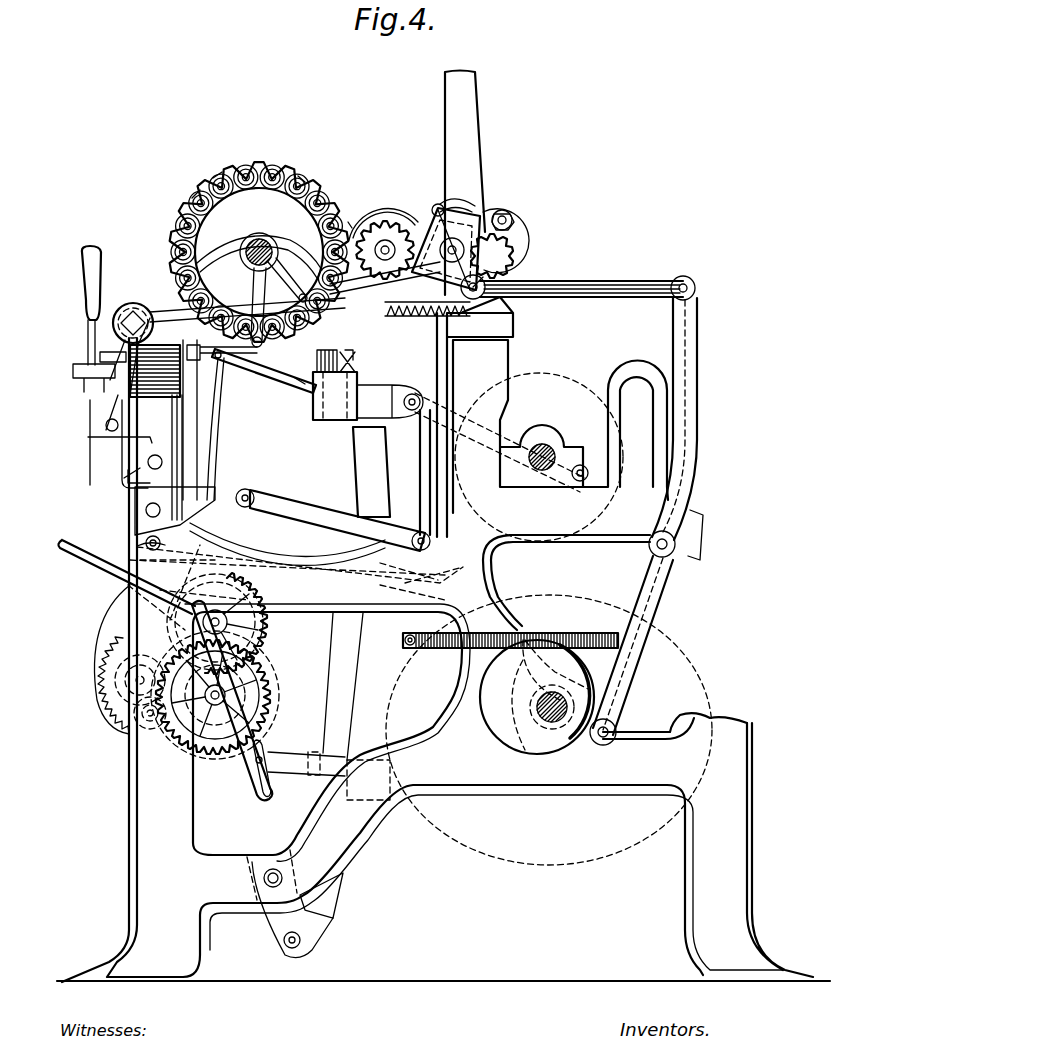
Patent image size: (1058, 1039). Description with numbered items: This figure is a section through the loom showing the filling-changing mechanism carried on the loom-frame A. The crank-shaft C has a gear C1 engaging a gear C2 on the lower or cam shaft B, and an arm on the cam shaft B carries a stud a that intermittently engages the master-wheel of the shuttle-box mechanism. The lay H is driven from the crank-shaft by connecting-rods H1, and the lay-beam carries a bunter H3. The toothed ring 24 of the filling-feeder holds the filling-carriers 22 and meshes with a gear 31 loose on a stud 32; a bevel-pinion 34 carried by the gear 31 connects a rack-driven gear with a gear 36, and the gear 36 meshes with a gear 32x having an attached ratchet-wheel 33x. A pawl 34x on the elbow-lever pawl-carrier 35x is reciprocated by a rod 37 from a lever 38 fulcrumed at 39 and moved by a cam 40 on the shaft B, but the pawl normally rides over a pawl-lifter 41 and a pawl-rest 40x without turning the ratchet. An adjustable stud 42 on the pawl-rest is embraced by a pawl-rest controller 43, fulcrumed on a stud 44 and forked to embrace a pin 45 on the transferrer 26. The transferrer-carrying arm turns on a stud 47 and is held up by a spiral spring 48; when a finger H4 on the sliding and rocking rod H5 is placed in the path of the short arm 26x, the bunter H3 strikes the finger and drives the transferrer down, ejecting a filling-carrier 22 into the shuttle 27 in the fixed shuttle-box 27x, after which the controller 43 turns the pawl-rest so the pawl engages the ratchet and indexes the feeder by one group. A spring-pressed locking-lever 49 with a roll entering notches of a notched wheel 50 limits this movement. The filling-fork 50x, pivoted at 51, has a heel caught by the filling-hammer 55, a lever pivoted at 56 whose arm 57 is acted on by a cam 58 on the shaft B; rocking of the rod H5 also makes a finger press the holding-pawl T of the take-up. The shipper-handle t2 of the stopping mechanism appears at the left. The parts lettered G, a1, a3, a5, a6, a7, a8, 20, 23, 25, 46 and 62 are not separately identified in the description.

The loom-frame A is at (128, 797).
The lower or cam shaft B is at (555, 712).
The crank-shaft C is at (130, 478).
The gear C1 is at (574, 395).
The gear C2 is at (590, 862).
The holding-pawl T is at (110, 608).
The gear train G is at (197, 686).
The lay H is at (324, 418).
The connecting-rods H1 is at (520, 435).
The bunter H3 is at (313, 392).
The finger H4 is at (104, 418).
The sliding and rocking rod H5 is at (112, 440).
The stud a is at (140, 520).
The arm a1 is at (247, 490).
The slide bar a3 is at (347, 472).
The slide a5 is at (418, 476).
The sprocket wheel a6 is at (300, 185).
The hub a7 is at (260, 236).
The curved slot a8 is at (213, 240).
The shipper-handle t2 is at (78, 278).
The plate 20 is at (124, 478).
The filling-carrier 22 is at (216, 188).
The tooth 23 is at (350, 220).
The toothed ring 24 is at (196, 195).
The pins 25 is at (232, 180).
The transferrer 26 is at (272, 262).
The short arm of transferrer 26x is at (100, 358).
The shuttle 27 is at (370, 318).
The shuttle-box 27x is at (398, 339).
The gear 31 is at (372, 226).
The stud 32 is at (488, 205).
The gear 32x is at (363, 315).
The ratchet-wheel 33x is at (508, 210).
The bevel-pinion 34 is at (382, 222).
The pawl 34x is at (458, 200).
The pawl-carrier 35x is at (486, 200).
The gear 36 is at (420, 215).
The rod 37 is at (580, 290).
The lever 38 is at (697, 392).
The fulcrum 39 is at (650, 546).
The cam 40 is at (538, 638).
The pawl-rest 40x is at (436, 206).
The pawl-lifter 41 is at (452, 238).
The adjustable stud 42 is at (420, 295).
The pawl-rest controller 43 is at (400, 300).
The stud 44 is at (296, 292).
The pin 45 is at (210, 312).
The bar 46 is at (195, 300).
The stud 47 is at (115, 325).
The spiral spring 48 is at (144, 306).
The locking-lever 49 is at (520, 245).
The notched wheel 50 is at (507, 220).
The filling-fork 50x is at (290, 378).
The pivot 51 is at (258, 365).
The filling-hammer 55 is at (214, 425).
The pivot 56 is at (135, 530).
The arm 57 is at (440, 582).
The cam 58 is at (535, 770).
The plate 62 is at (205, 352).